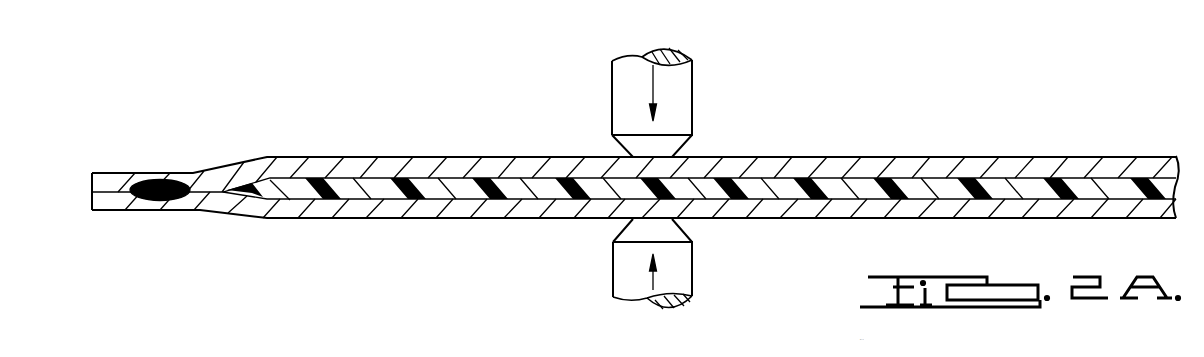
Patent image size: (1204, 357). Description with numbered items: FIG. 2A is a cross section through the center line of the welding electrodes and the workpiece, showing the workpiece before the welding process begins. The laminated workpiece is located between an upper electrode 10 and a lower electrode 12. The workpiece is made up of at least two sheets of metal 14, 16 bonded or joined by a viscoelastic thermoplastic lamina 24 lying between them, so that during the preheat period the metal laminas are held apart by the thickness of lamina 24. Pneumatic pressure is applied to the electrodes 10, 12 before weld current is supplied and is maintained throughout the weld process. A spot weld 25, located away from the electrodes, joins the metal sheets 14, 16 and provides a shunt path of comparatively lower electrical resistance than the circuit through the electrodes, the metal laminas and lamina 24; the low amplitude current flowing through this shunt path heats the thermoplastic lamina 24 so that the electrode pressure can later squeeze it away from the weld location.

The electrode 10 is at (692, 81).
The electrode 12 is at (616, 270).
The sheet of metal 14 is at (830, 162).
The sheet of metal 16 is at (801, 207).
The viscoelastic thermoplastic lamina 24 is at (923, 186).
The spot weld 25 is at (165, 180).